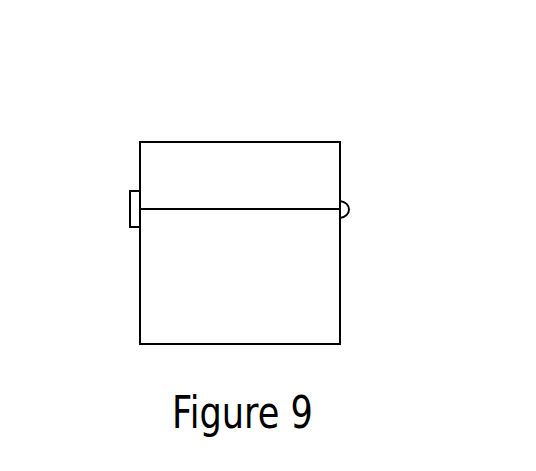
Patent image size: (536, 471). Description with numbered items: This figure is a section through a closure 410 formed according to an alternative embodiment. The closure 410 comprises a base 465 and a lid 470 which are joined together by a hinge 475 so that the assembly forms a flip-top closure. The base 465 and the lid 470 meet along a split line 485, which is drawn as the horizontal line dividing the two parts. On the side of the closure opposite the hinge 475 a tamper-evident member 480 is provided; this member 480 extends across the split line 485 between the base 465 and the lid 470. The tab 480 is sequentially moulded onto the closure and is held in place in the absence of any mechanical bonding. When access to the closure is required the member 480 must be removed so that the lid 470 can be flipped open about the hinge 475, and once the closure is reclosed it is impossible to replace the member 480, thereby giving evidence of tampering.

The closure 410 is at (409, 79).
The base 465 is at (340, 290).
The lid 470 is at (340, 180).
The hinge 475 is at (349, 209).
The tamper-evident member 480 is at (130, 208).
The split line 485 is at (220, 209).